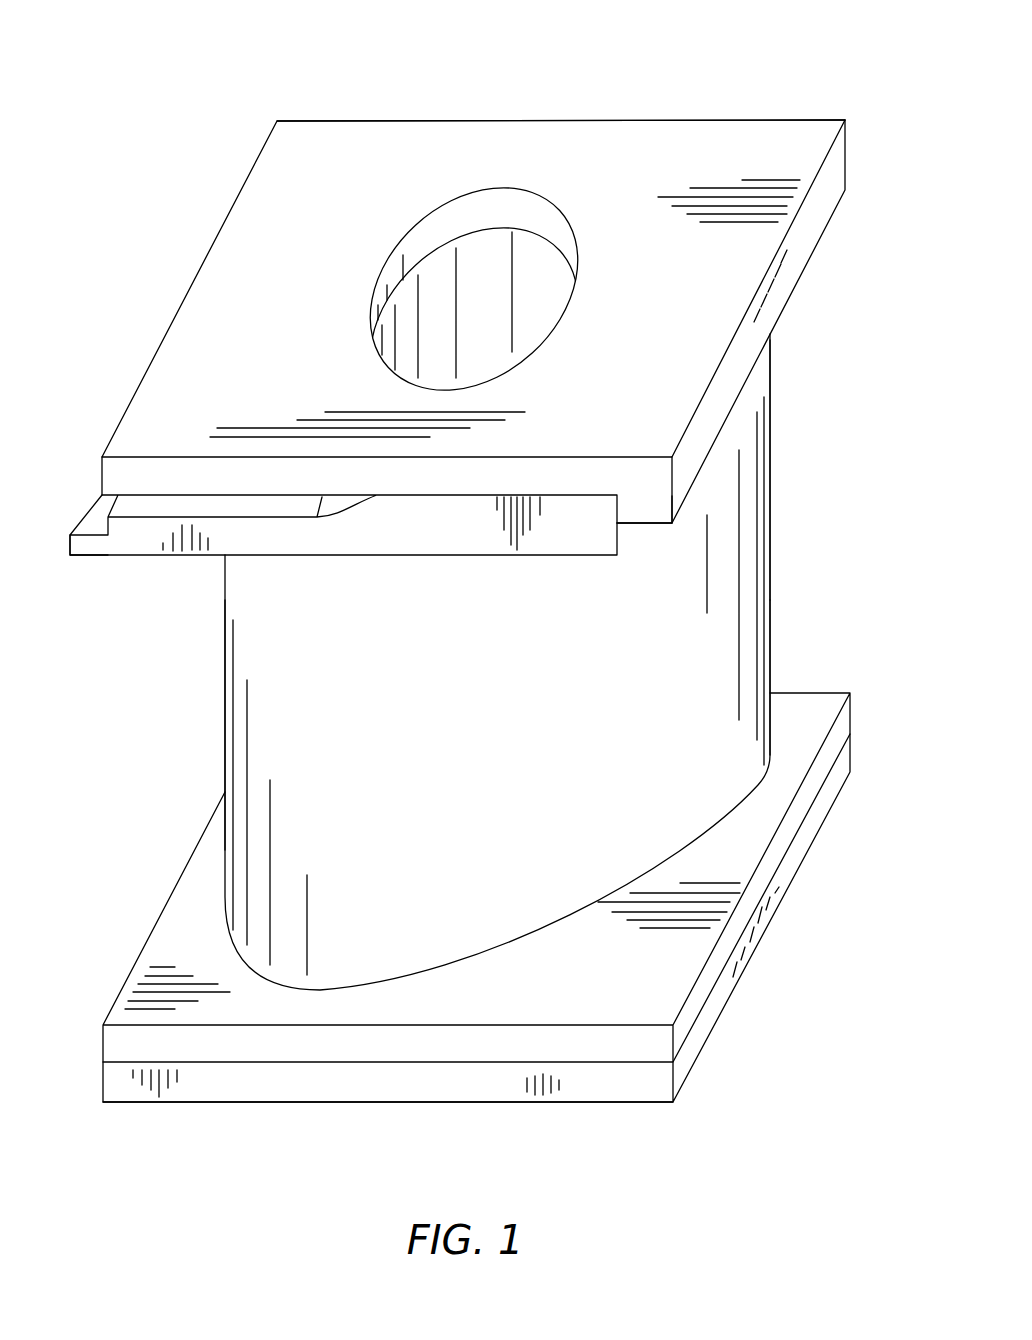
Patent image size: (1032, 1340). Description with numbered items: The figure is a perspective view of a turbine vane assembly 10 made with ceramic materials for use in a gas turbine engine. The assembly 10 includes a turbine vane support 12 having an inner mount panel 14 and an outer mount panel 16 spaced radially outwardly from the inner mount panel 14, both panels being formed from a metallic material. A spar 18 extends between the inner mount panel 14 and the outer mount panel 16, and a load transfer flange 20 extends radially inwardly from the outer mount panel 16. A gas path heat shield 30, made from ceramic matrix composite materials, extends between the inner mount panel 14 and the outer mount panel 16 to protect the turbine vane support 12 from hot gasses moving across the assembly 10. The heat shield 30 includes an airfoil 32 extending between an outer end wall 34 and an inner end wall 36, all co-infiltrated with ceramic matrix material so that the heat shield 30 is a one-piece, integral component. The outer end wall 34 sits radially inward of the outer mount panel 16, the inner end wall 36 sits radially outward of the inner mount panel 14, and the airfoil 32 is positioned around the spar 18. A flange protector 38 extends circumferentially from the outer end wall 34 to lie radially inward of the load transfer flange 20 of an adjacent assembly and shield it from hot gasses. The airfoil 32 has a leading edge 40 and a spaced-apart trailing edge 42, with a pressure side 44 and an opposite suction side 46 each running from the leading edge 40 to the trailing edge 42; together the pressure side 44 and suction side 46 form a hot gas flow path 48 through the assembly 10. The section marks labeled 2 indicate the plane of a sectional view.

The turbine vane assembly 10 is at (845, 68).
The turbine vane support 12 is at (519, 331).
The inner mount panel 14 is at (476, 897).
The outer mount panel 16 is at (772, 138).
The spar 18 is at (490, 270).
The load transfer flange 20 is at (651, 512).
The gas path heat shield 30 is at (728, 633).
The airfoil 32 is at (752, 678).
The outer end wall 34 is at (523, 547).
The inner end wall 36 is at (533, 1040).
The flange protector 38 is at (88, 548).
The leading edge 40 is at (237, 728).
The trailing edge 42 is at (770, 563).
The pressure side 44 is at (197, 648).
The suction side 46 is at (688, 733).
The hot gas flow path 48 is at (347, 827).
The section line 2- 2 is at (72, 479).